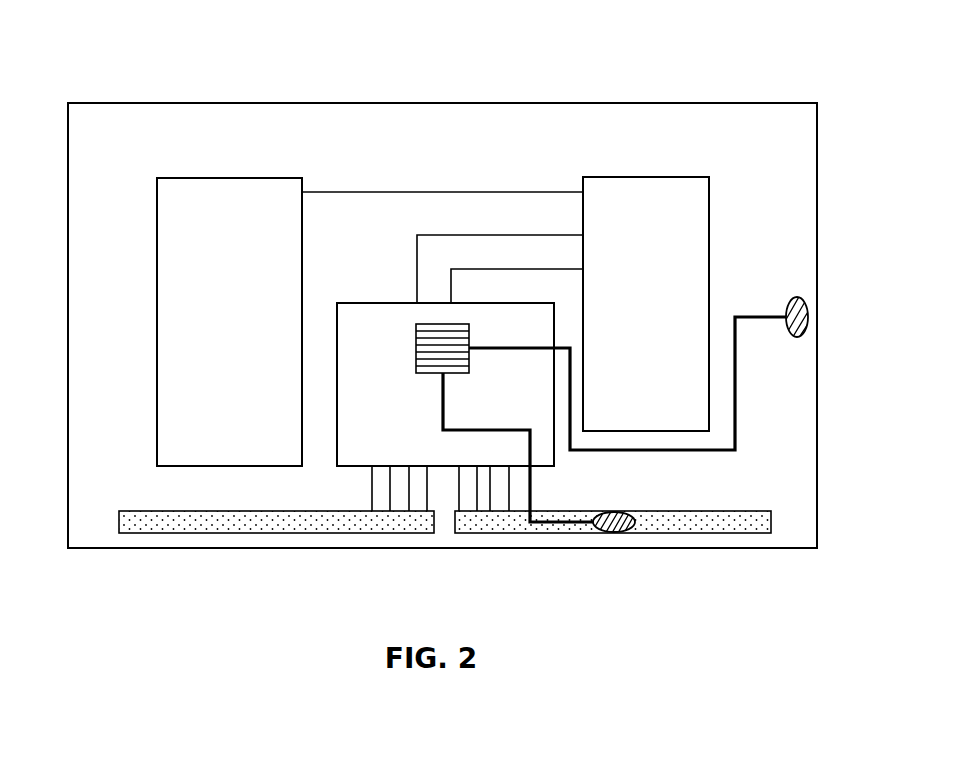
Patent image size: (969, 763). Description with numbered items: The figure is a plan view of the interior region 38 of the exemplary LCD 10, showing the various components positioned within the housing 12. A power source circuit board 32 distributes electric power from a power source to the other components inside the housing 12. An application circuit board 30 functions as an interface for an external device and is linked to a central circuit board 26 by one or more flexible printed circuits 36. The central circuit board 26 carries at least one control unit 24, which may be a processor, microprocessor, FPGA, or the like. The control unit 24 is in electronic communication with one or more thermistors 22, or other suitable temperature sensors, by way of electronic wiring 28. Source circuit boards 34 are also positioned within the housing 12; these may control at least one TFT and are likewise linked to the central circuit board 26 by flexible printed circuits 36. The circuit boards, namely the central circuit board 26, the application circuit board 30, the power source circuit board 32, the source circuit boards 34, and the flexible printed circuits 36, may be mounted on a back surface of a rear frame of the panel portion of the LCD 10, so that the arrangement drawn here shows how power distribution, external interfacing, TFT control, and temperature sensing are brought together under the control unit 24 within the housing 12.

The LCD 10 is at (748, 72).
The housing 12 is at (416, 102).
The thermistors 22 is at (808, 317).
The control unit 24 is at (416, 348).
The central circuit board 26 is at (385, 428).
The electronic wiring 28 is at (739, 403).
The application circuit board 30 is at (646, 304).
The power source circuit board 32 is at (229, 322).
The source circuit boards 34 is at (160, 521).
The flexible printed circuits 36 is at (478, 248).
The interior region 38 is at (488, 140).